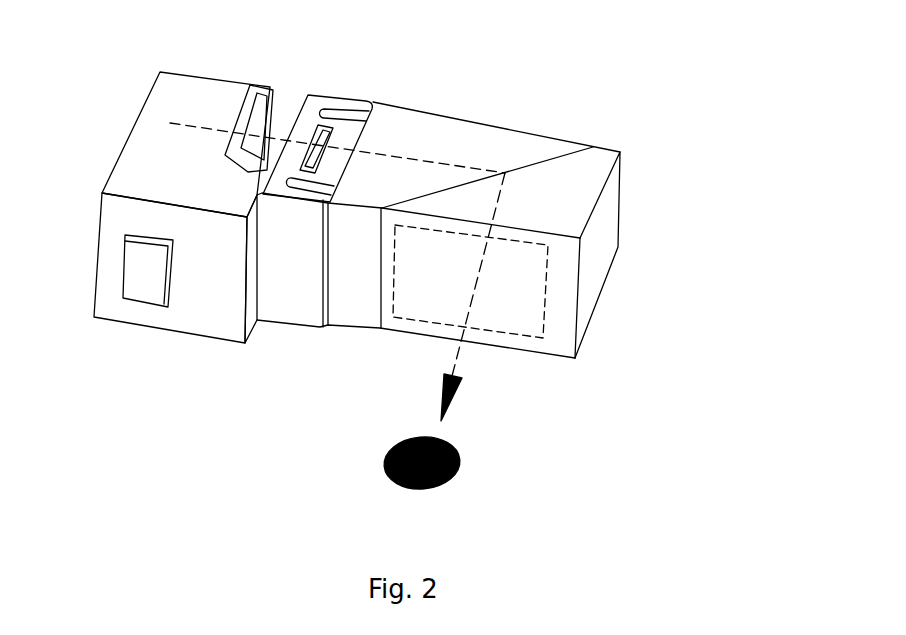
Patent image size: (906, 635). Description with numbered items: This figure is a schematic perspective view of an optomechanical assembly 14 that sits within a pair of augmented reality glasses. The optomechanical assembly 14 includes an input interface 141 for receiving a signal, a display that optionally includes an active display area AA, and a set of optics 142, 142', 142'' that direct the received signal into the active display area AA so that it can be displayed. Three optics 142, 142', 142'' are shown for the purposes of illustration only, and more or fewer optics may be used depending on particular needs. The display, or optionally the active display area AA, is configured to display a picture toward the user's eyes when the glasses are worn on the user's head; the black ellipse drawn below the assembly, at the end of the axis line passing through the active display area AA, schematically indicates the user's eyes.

The optomechanical assembly 14 is at (357, 197).
The input interface 141 is at (155, 268).
The optic 142 is at (321, 95).
The optic 142' is at (483, 122).
The optic 142'' is at (597, 281).
The active display area AA is at (517, 307).